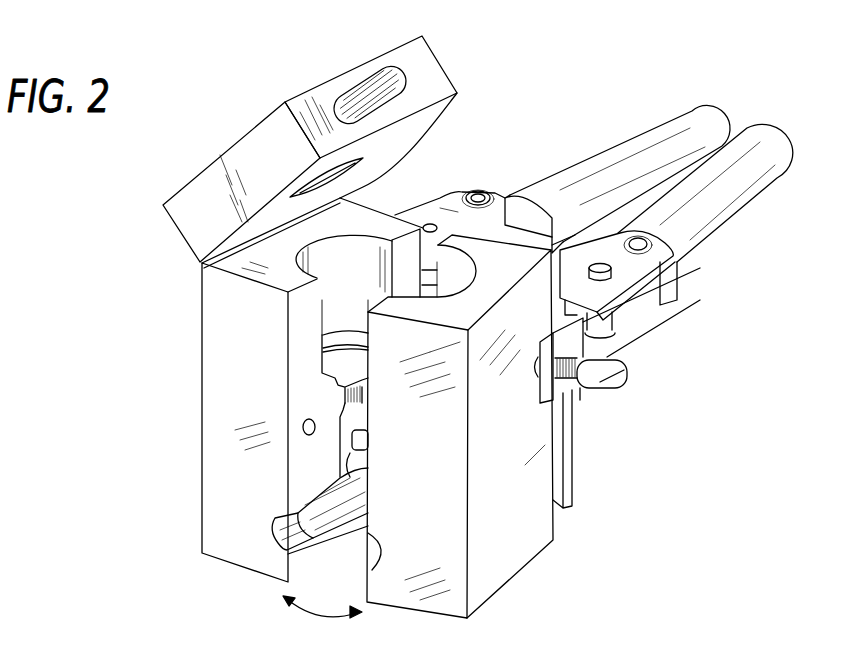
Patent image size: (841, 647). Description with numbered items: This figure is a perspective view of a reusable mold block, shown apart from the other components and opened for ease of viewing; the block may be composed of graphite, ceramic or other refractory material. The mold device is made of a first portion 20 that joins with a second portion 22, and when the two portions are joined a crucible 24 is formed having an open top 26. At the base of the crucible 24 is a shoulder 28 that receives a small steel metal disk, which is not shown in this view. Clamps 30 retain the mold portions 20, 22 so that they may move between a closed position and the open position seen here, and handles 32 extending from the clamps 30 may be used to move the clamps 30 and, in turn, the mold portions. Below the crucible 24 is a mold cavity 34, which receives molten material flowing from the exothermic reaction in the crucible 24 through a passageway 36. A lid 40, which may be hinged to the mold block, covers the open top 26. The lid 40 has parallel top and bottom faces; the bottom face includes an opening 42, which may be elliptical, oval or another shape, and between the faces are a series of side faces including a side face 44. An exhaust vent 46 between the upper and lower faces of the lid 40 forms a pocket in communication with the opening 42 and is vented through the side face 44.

The first portion 20 is at (217, 420).
The second portion 22 is at (503, 553).
The crucible 24 is at (333, 297).
The open top 26 is at (315, 240).
The shoulder 28 is at (353, 362).
The clamps 30 is at (557, 388).
The handles 32 is at (720, 187).
The mold cavity 34 is at (276, 530).
The passageway 36 is at (345, 467).
The lid 40 is at (320, 82).
The opening 42 is at (399, 188).
The side face 44 is at (413, 63).
The exhaust vent 46 is at (393, 86).